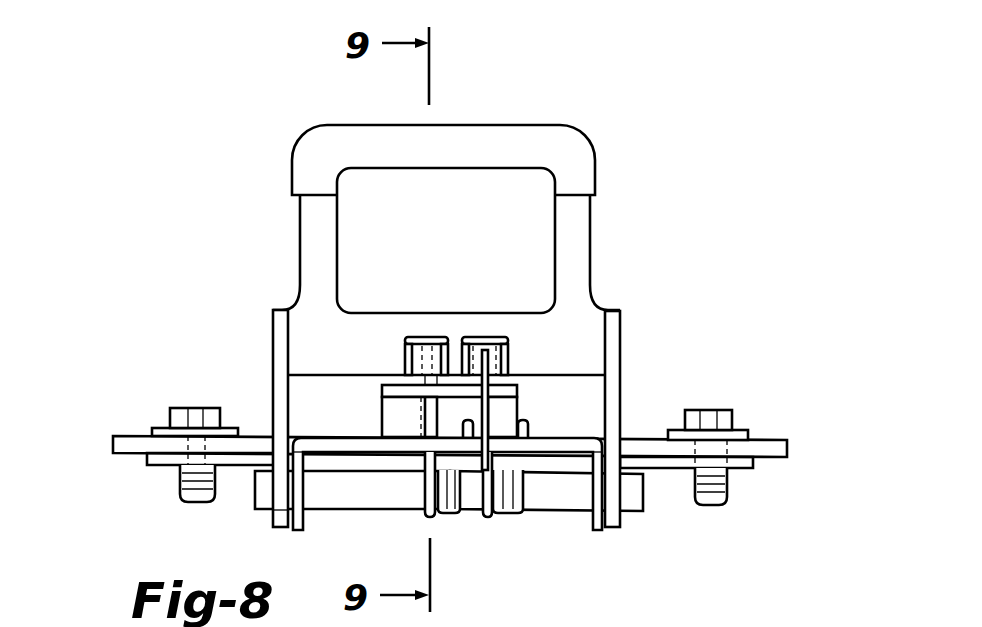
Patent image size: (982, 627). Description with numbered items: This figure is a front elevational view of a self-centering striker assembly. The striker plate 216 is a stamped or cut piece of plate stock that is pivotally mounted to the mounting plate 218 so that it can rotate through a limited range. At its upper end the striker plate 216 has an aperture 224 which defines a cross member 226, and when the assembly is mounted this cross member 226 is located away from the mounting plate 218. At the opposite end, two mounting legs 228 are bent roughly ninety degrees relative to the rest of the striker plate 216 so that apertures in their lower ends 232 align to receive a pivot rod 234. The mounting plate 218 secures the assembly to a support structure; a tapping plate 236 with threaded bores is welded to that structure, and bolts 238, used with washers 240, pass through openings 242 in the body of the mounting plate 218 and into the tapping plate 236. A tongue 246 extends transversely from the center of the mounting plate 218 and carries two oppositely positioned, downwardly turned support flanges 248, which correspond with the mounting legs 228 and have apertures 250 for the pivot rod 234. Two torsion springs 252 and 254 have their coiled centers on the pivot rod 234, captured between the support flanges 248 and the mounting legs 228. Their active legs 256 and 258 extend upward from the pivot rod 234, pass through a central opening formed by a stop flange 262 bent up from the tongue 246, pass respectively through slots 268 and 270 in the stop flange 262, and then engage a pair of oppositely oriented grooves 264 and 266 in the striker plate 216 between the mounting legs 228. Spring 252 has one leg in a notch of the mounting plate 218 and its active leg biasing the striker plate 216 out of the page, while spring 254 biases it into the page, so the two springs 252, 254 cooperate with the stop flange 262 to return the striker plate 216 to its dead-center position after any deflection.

The striker plate 216 is at (493, 215).
The mounting plate 218 is at (798, 448).
The aperture 224 is at (548, 176).
The cross member 226 is at (497, 145).
The mounting legs 228 is at (283, 348).
The lower ends 232 is at (634, 513).
The pivot rod 234 is at (255, 490).
The tapping plate 236 is at (165, 463).
The bolts 238 is at (196, 408).
The washers 240 is at (157, 428).
The openings 242 is at (182, 440).
The tongue 246 is at (333, 441).
The support flanges 248 is at (312, 508).
The apertures 250 is at (279, 513).
The torsion spring 252 is at (437, 518).
The torsion spring 254 is at (500, 520).
The active leg 256 is at (383, 408).
The active leg 258 is at (487, 415).
The stop flange 262 is at (400, 385).
The groove 264 is at (424, 338).
The groove 266 is at (500, 338).
The slot 268 is at (422, 422).
The slot 270 is at (500, 373).